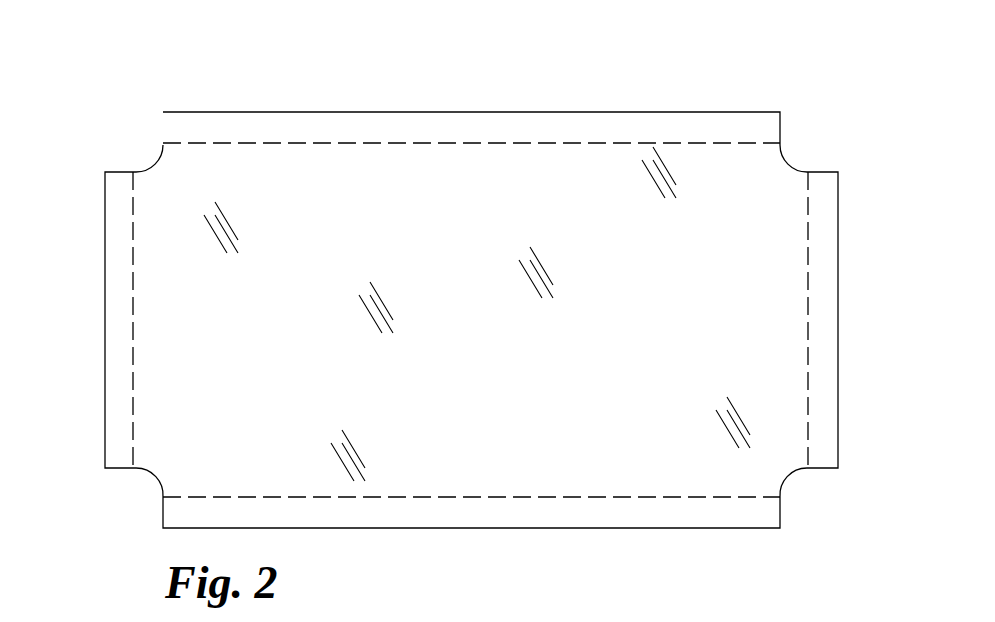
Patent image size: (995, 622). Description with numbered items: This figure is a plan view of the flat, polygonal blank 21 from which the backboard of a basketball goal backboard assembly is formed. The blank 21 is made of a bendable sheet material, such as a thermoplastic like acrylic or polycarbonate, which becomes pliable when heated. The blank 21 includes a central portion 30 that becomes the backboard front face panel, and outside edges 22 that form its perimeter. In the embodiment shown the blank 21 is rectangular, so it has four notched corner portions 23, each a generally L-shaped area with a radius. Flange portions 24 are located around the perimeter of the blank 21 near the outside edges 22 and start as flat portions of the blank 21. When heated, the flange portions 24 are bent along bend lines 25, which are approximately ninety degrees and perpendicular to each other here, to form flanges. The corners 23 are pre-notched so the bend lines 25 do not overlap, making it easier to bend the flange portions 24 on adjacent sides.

The blank 21 is at (465, 319).
The outside edges 22 is at (220, 112).
The corner portion 23 is at (134, 153).
The flange portions 24 is at (376, 130).
The bend lines 25 is at (546, 142).
The central portion 30 is at (752, 392).